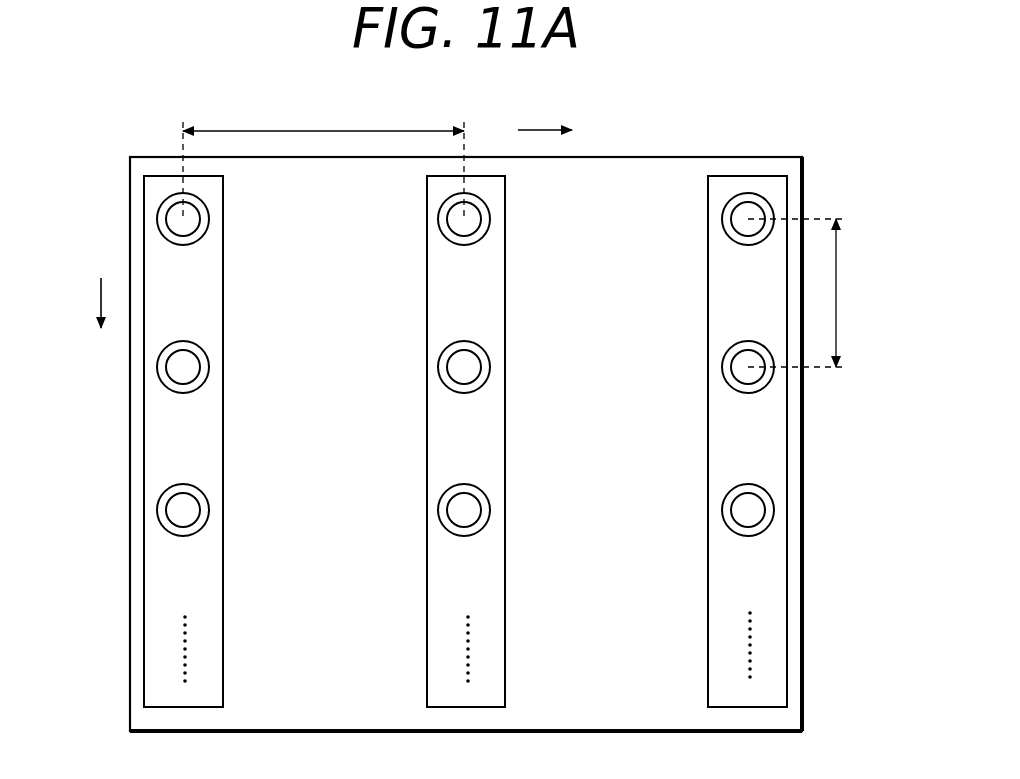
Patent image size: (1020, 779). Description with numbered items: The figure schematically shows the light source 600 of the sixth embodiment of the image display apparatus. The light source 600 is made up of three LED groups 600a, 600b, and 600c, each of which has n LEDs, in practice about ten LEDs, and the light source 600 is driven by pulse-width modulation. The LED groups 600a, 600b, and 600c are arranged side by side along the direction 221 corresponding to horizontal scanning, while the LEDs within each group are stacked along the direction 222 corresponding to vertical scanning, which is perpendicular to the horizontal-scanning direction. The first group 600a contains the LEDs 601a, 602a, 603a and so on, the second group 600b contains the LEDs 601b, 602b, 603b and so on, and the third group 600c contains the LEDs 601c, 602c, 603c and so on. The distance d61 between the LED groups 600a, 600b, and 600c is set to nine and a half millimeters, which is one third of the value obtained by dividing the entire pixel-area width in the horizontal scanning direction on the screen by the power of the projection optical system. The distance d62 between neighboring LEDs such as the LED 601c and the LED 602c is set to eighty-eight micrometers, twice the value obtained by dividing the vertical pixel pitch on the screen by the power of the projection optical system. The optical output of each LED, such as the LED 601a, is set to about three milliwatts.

The light source 600 is at (722, 157).
The LED group 600a is at (224, 228).
The LED group 600b is at (426, 227).
The LED group 600c is at (708, 225).
The LED 601a is at (185, 247).
The LED 602a is at (185, 395).
The LED 603a is at (185, 538).
The LED 601b is at (466, 247).
The LED 602b is at (466, 395).
The LED 603b is at (466, 538).
The LED 601c is at (750, 247).
The LED 602c is at (750, 395).
The LED 603c is at (750, 538).
The direction corresponding to horizontal scanning 221 is at (545, 128).
The direction corresponding to vertical scanning 222 is at (98, 291).
The distance between the LED groups d61 is at (318, 130).
The distance between the LEDs d62 is at (845, 297).